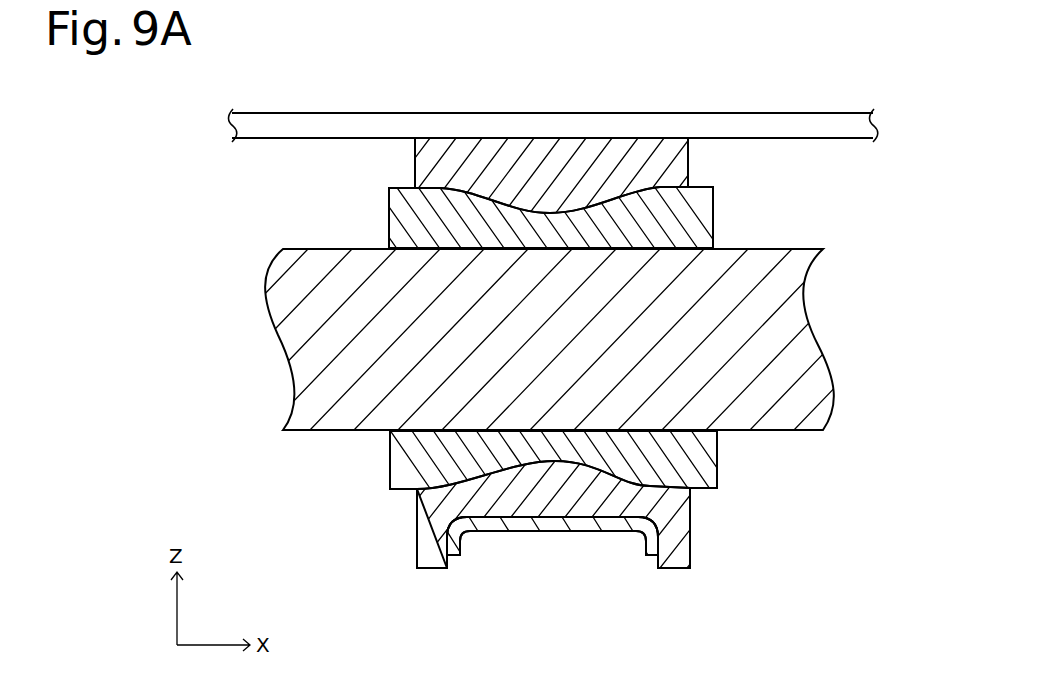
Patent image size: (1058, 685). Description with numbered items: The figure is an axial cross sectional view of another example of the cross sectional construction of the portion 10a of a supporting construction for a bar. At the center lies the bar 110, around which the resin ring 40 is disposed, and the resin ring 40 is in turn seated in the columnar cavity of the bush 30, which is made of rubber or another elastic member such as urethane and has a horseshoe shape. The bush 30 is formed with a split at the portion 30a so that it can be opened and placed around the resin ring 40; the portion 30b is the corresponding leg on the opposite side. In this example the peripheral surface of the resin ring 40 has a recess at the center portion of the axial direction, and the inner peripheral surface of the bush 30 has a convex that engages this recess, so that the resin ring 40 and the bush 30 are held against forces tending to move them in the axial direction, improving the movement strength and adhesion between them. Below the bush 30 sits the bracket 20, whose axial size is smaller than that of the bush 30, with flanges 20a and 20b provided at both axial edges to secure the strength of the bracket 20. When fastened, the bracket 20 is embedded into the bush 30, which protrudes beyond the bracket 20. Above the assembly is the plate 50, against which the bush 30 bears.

The cover plate 50 is at (778, 122).
The bush 30 is at (680, 166).
The resin ring 40 is at (705, 220).
The shaft 110 is at (808, 345).
The dotted line portion of bush 30a is at (422, 546).
The second leg portion of seal member 30b is at (682, 558).
The bracket 20 is at (540, 523).
The flange 20a is at (457, 548).
The flange 20b is at (648, 548).
The portion 10a is at (524, 585).